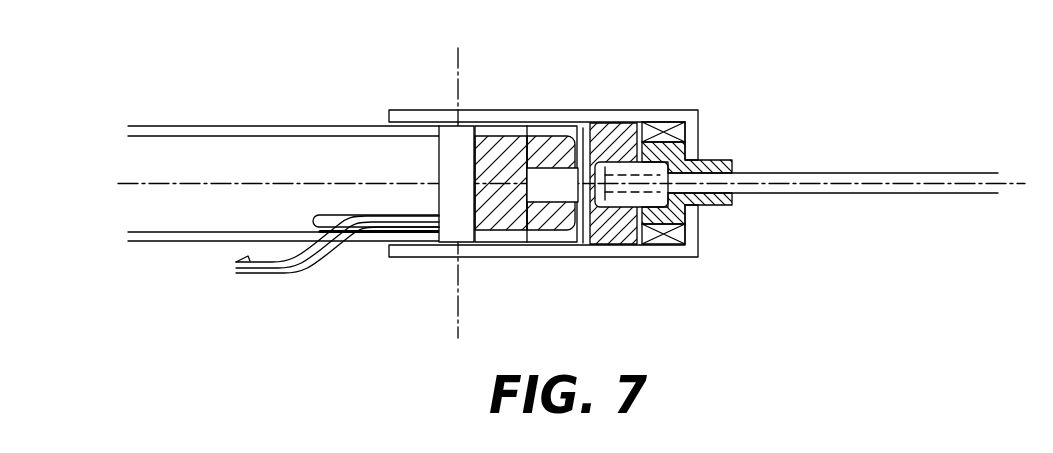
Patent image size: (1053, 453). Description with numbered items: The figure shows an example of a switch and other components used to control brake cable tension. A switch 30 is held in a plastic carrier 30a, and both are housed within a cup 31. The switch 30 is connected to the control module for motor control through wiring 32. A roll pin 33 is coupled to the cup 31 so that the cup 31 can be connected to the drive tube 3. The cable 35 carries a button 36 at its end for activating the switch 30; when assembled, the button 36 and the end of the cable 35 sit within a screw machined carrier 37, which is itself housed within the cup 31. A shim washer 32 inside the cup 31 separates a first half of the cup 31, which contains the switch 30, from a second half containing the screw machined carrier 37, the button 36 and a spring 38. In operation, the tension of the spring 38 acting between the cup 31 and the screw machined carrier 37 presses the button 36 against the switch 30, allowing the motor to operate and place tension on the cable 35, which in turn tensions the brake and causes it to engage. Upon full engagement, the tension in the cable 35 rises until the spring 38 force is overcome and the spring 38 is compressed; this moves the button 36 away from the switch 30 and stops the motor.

The drive tube 3 is at (230, 117).
The switch 30 is at (526, 188).
The plastic carrier 30a is at (504, 218).
The cup 31 is at (703, 259).
The wiring 32 is at (233, 269).
The roll pin 33 is at (437, 259).
The cable 35 is at (897, 201).
The button 36 is at (627, 171).
The screw machined carrier 37 is at (735, 151).
The spring 38 is at (668, 120).